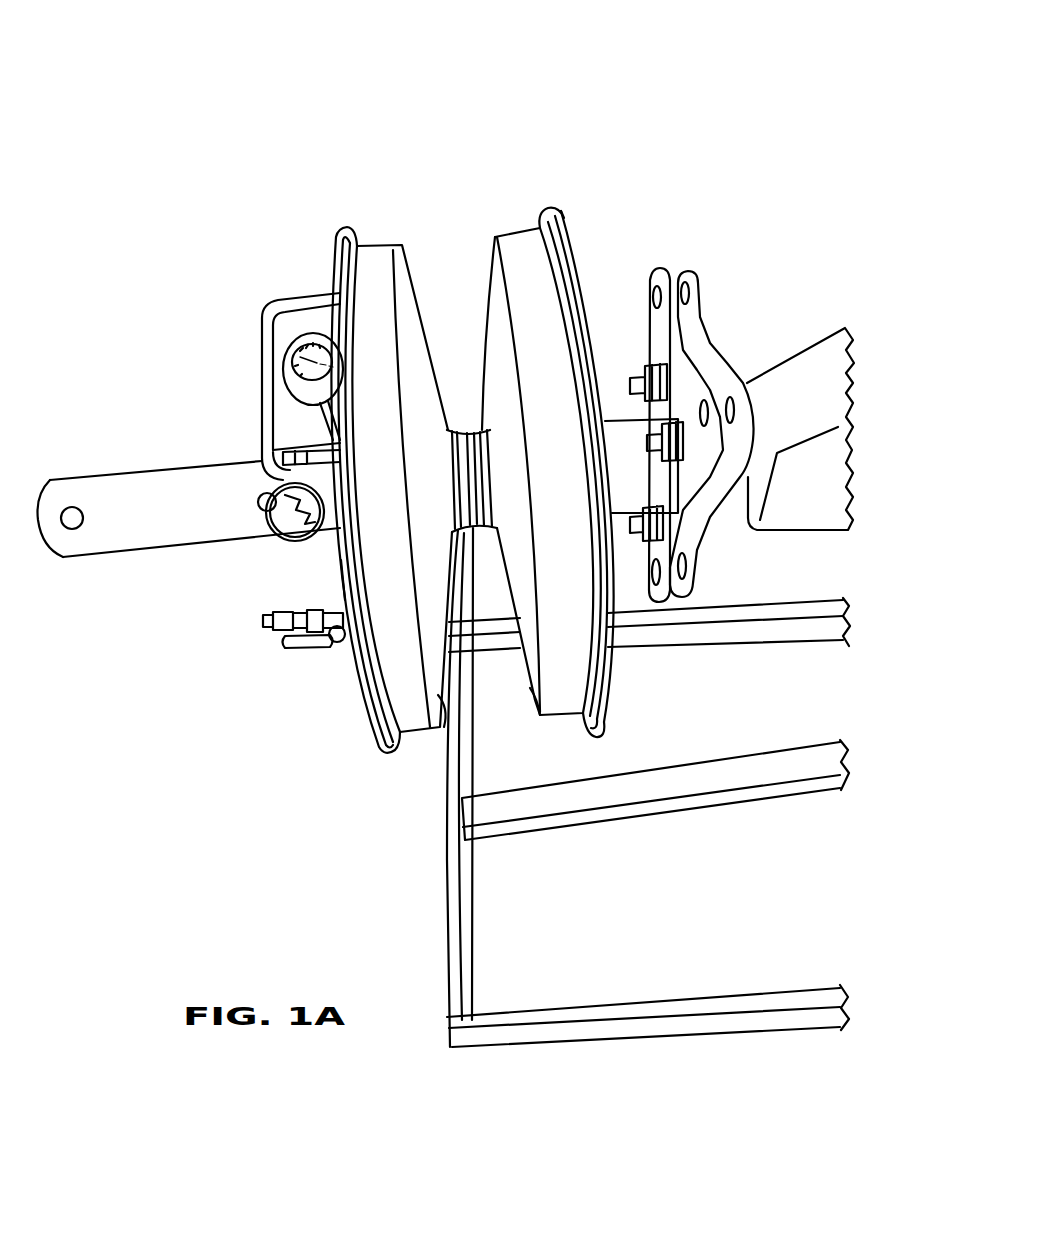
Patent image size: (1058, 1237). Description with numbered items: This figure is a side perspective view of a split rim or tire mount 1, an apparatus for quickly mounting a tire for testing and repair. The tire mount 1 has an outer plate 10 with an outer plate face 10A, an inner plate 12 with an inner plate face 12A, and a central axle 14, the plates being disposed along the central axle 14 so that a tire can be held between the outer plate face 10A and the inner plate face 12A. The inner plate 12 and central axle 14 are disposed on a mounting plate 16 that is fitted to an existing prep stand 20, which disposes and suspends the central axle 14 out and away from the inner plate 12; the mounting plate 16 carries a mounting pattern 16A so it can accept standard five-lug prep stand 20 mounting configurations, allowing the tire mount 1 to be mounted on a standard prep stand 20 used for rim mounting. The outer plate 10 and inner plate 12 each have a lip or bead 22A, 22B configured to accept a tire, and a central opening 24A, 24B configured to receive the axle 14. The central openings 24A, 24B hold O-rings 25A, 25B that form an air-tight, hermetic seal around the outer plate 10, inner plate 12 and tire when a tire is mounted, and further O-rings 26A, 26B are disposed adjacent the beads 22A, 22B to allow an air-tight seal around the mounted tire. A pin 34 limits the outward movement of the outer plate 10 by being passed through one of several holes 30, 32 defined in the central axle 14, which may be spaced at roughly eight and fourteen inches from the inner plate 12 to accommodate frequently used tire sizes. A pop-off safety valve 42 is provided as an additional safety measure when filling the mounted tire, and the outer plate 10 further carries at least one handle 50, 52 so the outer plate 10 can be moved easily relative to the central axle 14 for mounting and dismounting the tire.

The tire mount 1 is at (850, 185).
The outer plate 10 is at (360, 682).
The outer plate face 10A is at (440, 723).
The inner plate 12 is at (612, 665).
The inner plate face 12A is at (497, 530).
The central axle 14 is at (143, 480).
The mounting plate 16 is at (662, 274).
The mounting pattern 16A is at (667, 393).
The prep stand 20 is at (820, 468).
The bead 22A is at (343, 236).
The bead 22B is at (557, 210).
The central opening 24A is at (476, 530).
The central opening 24B is at (488, 528).
The O-ring 25A is at (462, 430).
The O-ring 25B is at (470, 430).
The O-ring 26A is at (338, 262).
The O-ring 26B is at (573, 270).
The hole 30 is at (283, 532).
The hole 32 is at (75, 527).
The pin 34 is at (262, 505).
The pop-off safety valve 42 is at (263, 627).
The handle 50 is at (270, 318).
The handle 52 is at (340, 573).